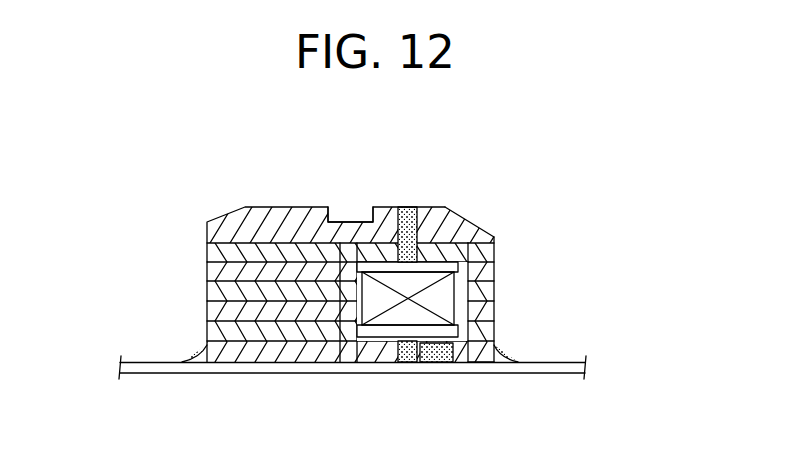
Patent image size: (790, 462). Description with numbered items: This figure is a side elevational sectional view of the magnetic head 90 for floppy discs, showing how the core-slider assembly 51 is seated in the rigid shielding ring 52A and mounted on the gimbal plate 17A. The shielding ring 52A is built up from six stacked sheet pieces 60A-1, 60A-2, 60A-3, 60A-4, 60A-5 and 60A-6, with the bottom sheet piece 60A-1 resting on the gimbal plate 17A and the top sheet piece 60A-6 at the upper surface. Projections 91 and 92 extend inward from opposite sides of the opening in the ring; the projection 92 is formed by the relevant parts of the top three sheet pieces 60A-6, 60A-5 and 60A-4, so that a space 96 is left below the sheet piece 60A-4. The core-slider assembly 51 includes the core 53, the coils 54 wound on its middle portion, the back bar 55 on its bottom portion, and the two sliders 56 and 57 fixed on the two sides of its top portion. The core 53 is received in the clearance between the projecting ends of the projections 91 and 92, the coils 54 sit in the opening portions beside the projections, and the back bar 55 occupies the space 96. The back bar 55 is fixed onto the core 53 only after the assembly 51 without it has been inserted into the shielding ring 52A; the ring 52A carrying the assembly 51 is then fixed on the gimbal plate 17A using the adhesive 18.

The gimbal plate 17A is at (150, 373).
The adhesive 18 is at (190, 352).
The core-slider assembly 51 is at (214, 201).
The rigid shielding ring 52A is at (192, 270).
The core 53 is at (408, 207).
The coils 54 is at (355, 325).
The back bar 55 is at (433, 357).
The slider 56 is at (483, 227).
The slider 57 is at (265, 212).
The sheet piece 60A-1 is at (494, 365).
The sheet piece 60A-2 is at (494, 340).
The sheet piece 60A-3 is at (494, 315).
The sheet piece 60A-4 is at (494, 293).
The sheet piece 60A-5 is at (494, 268).
The sheet piece 60A-6 is at (494, 250).
The magnetic head 90 is at (614, 162).
The projection 91 is at (361, 230).
The projection 92 is at (448, 230).
The space 96 is at (460, 357).